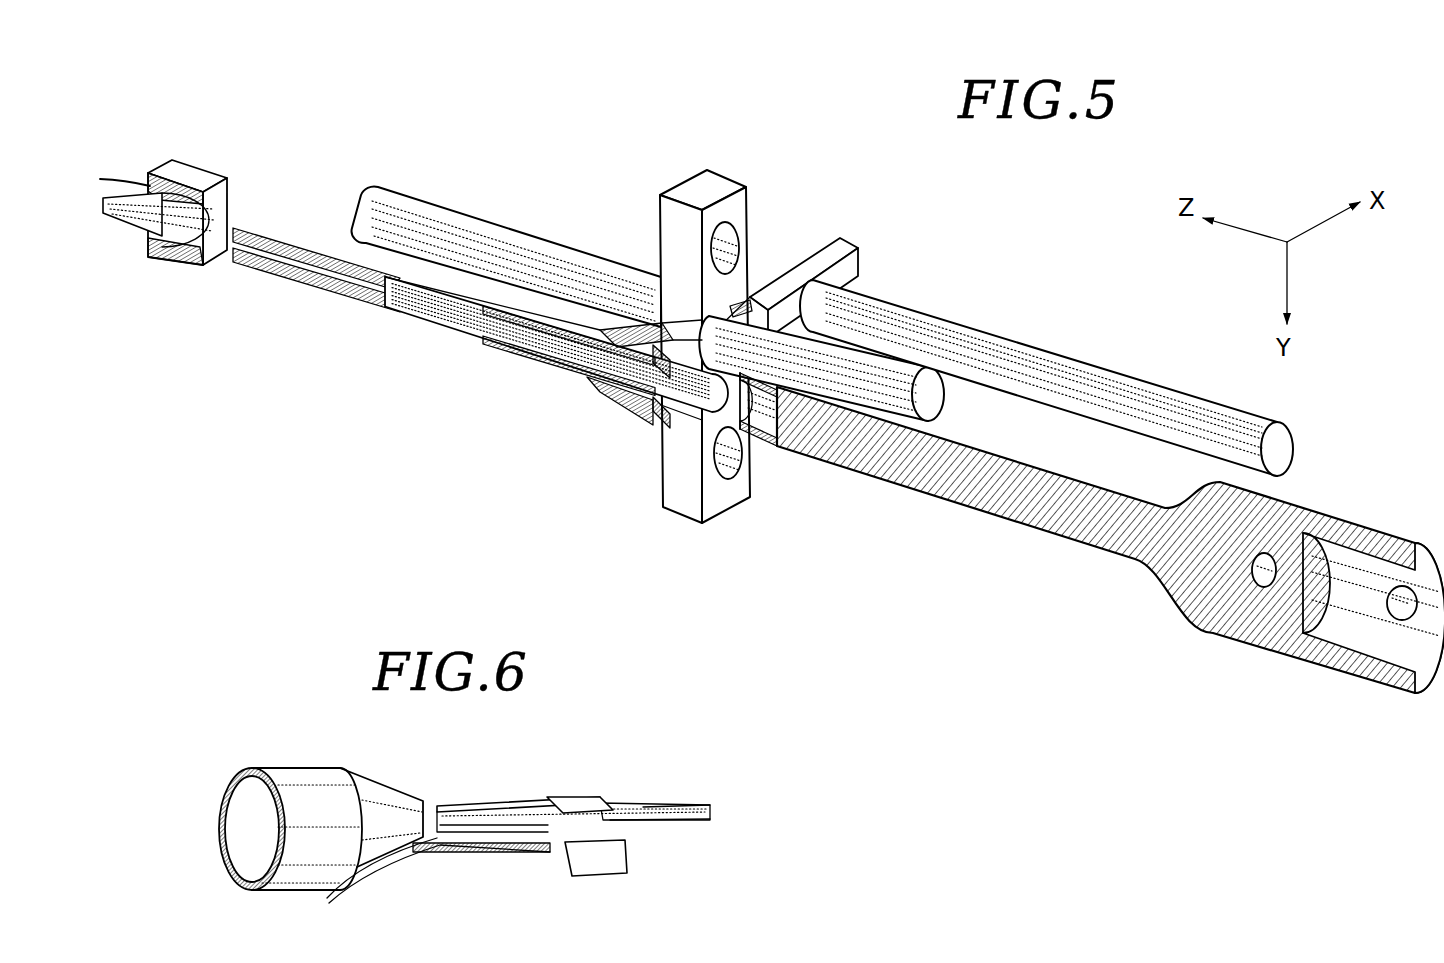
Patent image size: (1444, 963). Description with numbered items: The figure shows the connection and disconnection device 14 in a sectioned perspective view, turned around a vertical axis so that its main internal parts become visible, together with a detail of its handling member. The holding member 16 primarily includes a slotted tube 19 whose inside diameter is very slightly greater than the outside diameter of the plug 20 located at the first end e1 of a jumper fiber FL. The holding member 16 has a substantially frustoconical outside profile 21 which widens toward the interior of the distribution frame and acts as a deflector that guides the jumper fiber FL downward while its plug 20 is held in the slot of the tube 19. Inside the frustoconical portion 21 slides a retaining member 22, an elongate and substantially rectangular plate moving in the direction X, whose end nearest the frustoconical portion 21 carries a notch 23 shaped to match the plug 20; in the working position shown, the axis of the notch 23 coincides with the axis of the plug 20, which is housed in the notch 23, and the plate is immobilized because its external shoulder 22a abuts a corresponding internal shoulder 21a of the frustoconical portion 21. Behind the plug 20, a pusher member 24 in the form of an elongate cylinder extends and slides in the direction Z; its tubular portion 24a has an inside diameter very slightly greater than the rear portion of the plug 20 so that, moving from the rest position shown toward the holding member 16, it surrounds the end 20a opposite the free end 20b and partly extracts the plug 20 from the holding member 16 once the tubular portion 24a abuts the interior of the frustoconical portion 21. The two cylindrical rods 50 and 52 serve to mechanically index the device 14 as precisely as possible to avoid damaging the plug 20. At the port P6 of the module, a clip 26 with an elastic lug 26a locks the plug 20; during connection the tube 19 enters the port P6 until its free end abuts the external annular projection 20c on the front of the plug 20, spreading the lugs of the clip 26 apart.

In FIG. 5, the connection and disconnection device 14 is at (363, 405).
In FIG. 5, the holding member 16 is at (550, 367).
In FIG. 6, the holding member 16 is at (301, 753).
In FIG. 5, the slotted tube 19 is at (566, 374).
In FIG. 6, the slotted tube 19 is at (480, 797).
In FIG. 5, the plug 20 is at (403, 317).
In FIG. 6, the plug 20 is at (713, 825).
In FIG. 5, the end of the plug 20a is at (683, 428).
In FIG. 5, the free end of the plug 20b is at (257, 262).
In FIG. 5, the external annular projection 20c is at (488, 343).
In FIG. 5, the frustoconical outside profile 21 is at (612, 397).
In FIG. 6, the frustoconical outside profile 21 is at (380, 797).
In FIG. 5, the internal shoulder 21a is at (724, 314).
In FIG. 5, the retaining member 22 is at (848, 236).
In FIG. 5, the external shoulder 22a is at (753, 289).
In FIG. 5, the notch 23 is at (650, 416).
In FIG. 5, the pusher member 24 is at (1042, 548).
In FIG. 5, the tubular portion 24a is at (762, 447).
In FIG. 5, the clip 26 is at (197, 171).
In FIG. 5, the elastic lug 26a is at (206, 176).
In FIG. 5, the cylindrical rod 50 is at (483, 223).
In FIG. 5, the cylindrical rod 52 is at (973, 328).
In FIG. 5, the port P6 is at (198, 244).
In FIG. 6, the first end e1 is at (577, 820).
In FIG. 6, the jumper fiber FL is at (467, 837).